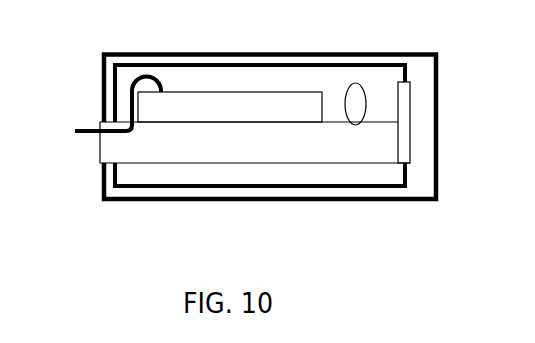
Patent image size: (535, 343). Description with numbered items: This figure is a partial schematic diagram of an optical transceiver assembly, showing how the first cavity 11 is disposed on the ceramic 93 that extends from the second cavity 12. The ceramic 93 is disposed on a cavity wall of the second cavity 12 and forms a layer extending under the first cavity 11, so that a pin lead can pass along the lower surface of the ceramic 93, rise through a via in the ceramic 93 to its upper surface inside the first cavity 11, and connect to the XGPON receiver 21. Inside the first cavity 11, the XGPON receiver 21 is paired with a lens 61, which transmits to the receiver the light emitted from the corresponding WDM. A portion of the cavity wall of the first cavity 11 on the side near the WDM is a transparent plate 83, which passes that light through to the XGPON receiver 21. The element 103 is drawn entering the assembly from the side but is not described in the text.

The first cavity 11 is at (270, 102).
The second cavity 12 is at (260, 162).
The XGPON receiver 21 is at (295, 93).
The lens 61 is at (363, 90).
The transparent plate 83 is at (410, 164).
The ceramic 93 is at (102, 118).
The optical fiber 103 is at (83, 135).